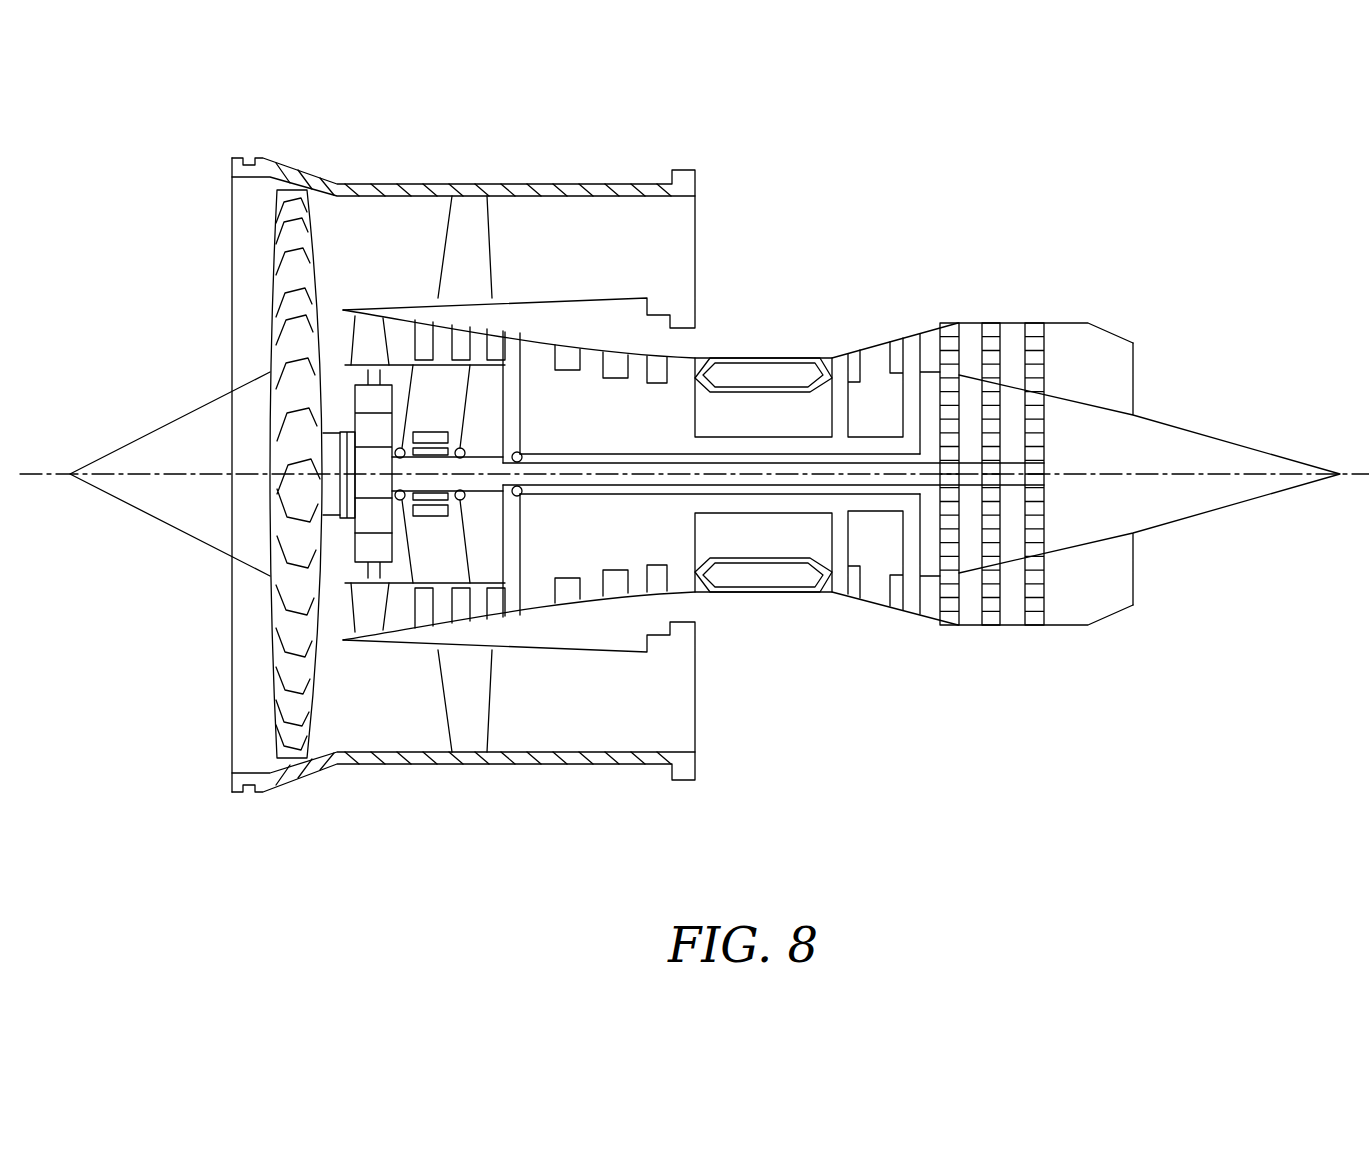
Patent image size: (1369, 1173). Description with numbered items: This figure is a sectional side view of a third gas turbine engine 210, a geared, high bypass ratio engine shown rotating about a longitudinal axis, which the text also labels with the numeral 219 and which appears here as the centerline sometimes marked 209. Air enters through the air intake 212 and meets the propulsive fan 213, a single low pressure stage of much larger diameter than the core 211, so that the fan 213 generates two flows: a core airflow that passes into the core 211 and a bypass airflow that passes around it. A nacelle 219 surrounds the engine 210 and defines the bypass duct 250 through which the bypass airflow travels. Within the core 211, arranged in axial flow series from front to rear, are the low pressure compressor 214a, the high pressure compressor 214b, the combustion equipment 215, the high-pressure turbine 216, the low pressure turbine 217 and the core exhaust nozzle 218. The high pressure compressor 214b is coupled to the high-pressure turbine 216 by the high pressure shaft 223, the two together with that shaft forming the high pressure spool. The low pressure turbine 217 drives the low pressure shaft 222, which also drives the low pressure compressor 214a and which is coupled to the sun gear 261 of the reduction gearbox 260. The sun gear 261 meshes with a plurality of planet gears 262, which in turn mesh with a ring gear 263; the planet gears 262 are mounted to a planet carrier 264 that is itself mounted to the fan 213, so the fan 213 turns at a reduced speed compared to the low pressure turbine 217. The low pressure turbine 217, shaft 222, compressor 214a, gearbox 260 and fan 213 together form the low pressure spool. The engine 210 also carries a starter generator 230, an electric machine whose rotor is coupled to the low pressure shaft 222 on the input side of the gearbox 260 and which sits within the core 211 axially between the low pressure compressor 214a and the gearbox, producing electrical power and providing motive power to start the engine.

The engine centerline axis 209 is at (38, 472).
The gas turbine engine 210 is at (1233, 211).
The core 211 is at (641, 600).
The air intake 212 is at (203, 232).
The propulsive fan 213 is at (295, 680).
The low pressure compressor 214a is at (463, 335).
The high pressure compressor 214b is at (690, 357).
The combustion equipment 215 is at (792, 577).
The high-pressure turbine 216 is at (908, 353).
The low pressure turbine 217 is at (988, 337).
The core exhaust nozzle 218 is at (1122, 375).
The nacelle 219 is at (532, 183).
The low pressure shaft 222 is at (552, 493).
The high pressure shaft 223 is at (795, 437).
The starter generator 230 is at (440, 412).
The bypass duct 250 is at (672, 228).
The reduction gearbox 260 is at (336, 457).
The sun gear 261 is at (355, 482).
The planet gears 262 is at (358, 515).
The ring gear 263 is at (358, 548).
The planet carrier 264 is at (340, 433).